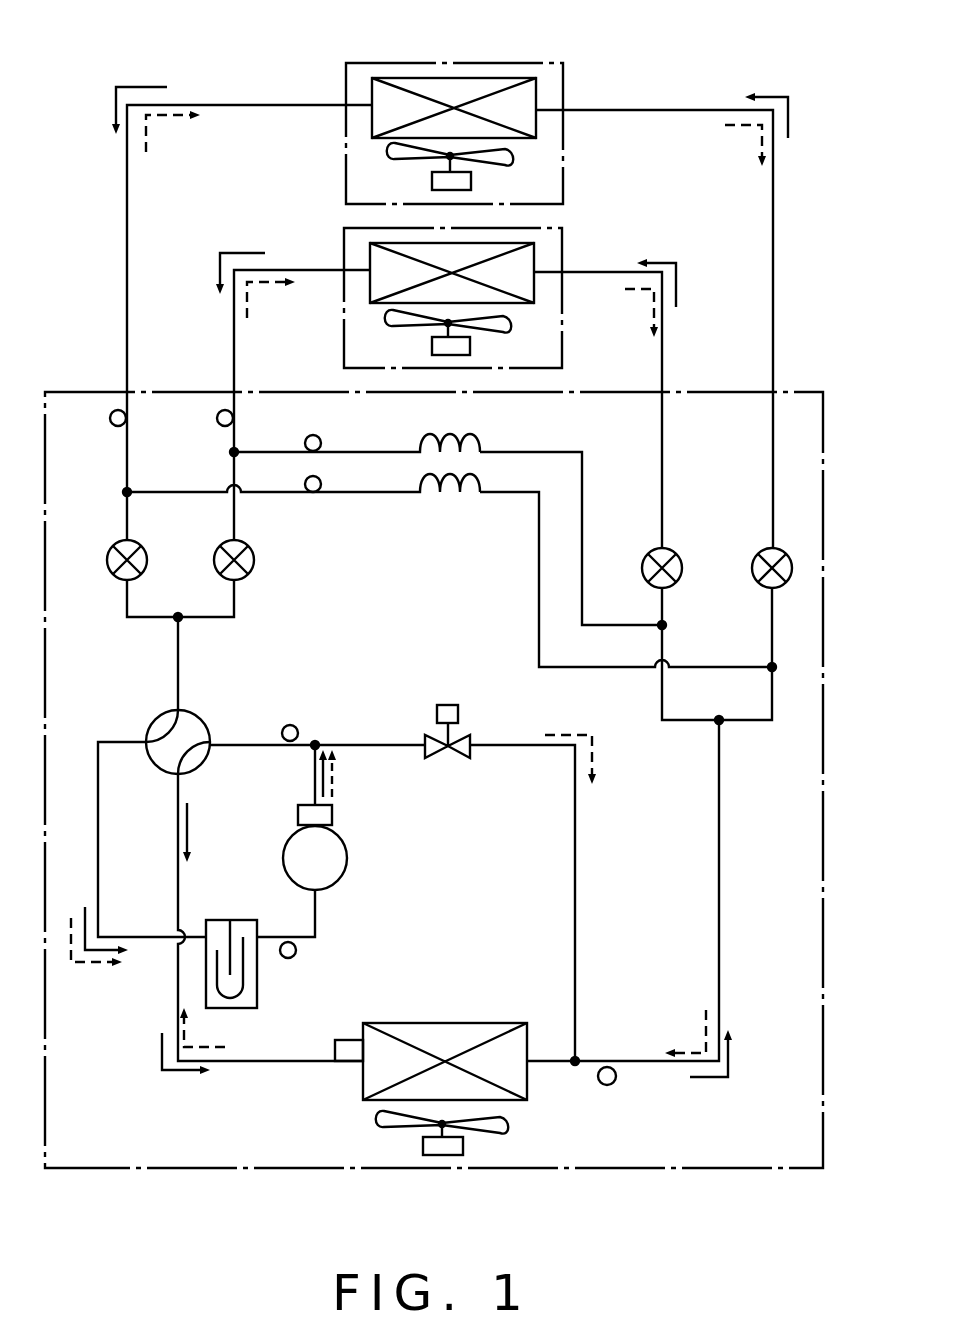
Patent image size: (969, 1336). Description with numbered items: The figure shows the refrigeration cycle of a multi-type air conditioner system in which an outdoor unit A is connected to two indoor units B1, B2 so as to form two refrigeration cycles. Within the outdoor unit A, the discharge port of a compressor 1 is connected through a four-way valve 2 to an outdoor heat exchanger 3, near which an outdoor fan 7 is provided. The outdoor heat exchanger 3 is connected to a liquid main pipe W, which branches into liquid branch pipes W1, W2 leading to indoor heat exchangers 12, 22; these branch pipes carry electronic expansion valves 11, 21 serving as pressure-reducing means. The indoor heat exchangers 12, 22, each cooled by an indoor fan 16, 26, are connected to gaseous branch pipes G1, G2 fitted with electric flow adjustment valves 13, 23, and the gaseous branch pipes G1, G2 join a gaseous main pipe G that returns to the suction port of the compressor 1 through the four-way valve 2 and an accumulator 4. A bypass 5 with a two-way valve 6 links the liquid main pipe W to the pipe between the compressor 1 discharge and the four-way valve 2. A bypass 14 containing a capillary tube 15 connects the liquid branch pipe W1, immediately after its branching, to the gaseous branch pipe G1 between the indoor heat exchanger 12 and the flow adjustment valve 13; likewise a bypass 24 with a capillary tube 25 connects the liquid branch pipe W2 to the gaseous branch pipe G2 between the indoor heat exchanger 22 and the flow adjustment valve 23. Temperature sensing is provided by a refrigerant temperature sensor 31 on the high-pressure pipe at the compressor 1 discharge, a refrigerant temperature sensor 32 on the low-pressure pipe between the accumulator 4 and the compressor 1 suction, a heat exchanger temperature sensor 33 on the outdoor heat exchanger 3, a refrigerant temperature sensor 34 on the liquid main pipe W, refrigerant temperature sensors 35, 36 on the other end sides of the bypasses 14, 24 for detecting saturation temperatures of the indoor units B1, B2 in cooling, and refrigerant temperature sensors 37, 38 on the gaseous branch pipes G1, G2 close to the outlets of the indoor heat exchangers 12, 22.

The compressor 1 is at (342, 878).
The four-way valve 2 is at (205, 765).
The outdoor heat exchanger 3 is at (512, 1023).
The accumulator 4 is at (233, 920).
The bypass 5 is at (575, 855).
The two-way valve 6 is at (451, 752).
The outdoor fan 7 is at (498, 1130).
The electronic expansion valve 11 is at (786, 585).
The indoor heat exchanger 12 is at (383, 78).
The electric flow adjustment valve 13 is at (112, 577).
The bypass 14 is at (539, 635).
The capillary tube 15 is at (478, 498).
The indoor fan 16 is at (500, 163).
The electronic expansion valve 21 is at (676, 585).
The indoor heat exchanger 22 is at (370, 258).
The electric flow adjustment valve 23 is at (248, 577).
The bypass 24 is at (582, 522).
The capillary tube 25 is at (480, 450).
The indoor fan 26 is at (498, 330).
The refrigerant temperature sensor 31 is at (297, 726).
The refrigerant temperature sensor 32 is at (296, 956).
The heat exchanger temperature sensor 33 is at (344, 1040).
The refrigerant temperature sensor 34 is at (614, 1083).
The refrigerant temperature sensor 35 is at (320, 479).
The refrigerant temperature sensor 36 is at (320, 437).
The refrigerant temperature sensor 37 is at (114, 426).
The refrigerant temperature sensor 38 is at (221, 426).
The outdoor unit A is at (823, 815).
The indoor unit B1 is at (518, 63).
The indoor unit B2 is at (566, 250).
The gaseous main pipe G is at (178, 663).
The gaseous branch pipe G1 is at (127, 341).
The gaseous branch pipe G2 is at (234, 341).
The liquid main pipe W is at (719, 860).
The liquid branch pipe W1 is at (772, 492).
The liquid branch pipe W2 is at (662, 470).